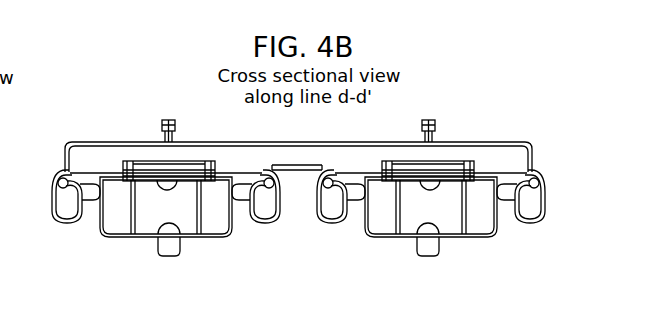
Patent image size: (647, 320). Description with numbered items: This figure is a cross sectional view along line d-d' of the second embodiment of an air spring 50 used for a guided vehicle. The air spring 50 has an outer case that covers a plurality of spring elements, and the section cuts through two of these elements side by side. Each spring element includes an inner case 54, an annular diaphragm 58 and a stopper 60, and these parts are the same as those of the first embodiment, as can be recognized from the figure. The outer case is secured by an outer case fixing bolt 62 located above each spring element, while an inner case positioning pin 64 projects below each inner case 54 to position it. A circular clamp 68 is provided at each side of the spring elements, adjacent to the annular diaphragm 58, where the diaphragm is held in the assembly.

The air spring 50 is at (546, 129).
The inner case 54 is at (216, 225).
The annular diaphragm 58 is at (68, 223).
The stopper 60 is at (150, 163).
The outer case fixing bolt 62 is at (171, 118).
The inner case positioning pin 64 is at (171, 257).
The circular clamp 68 is at (48, 181).